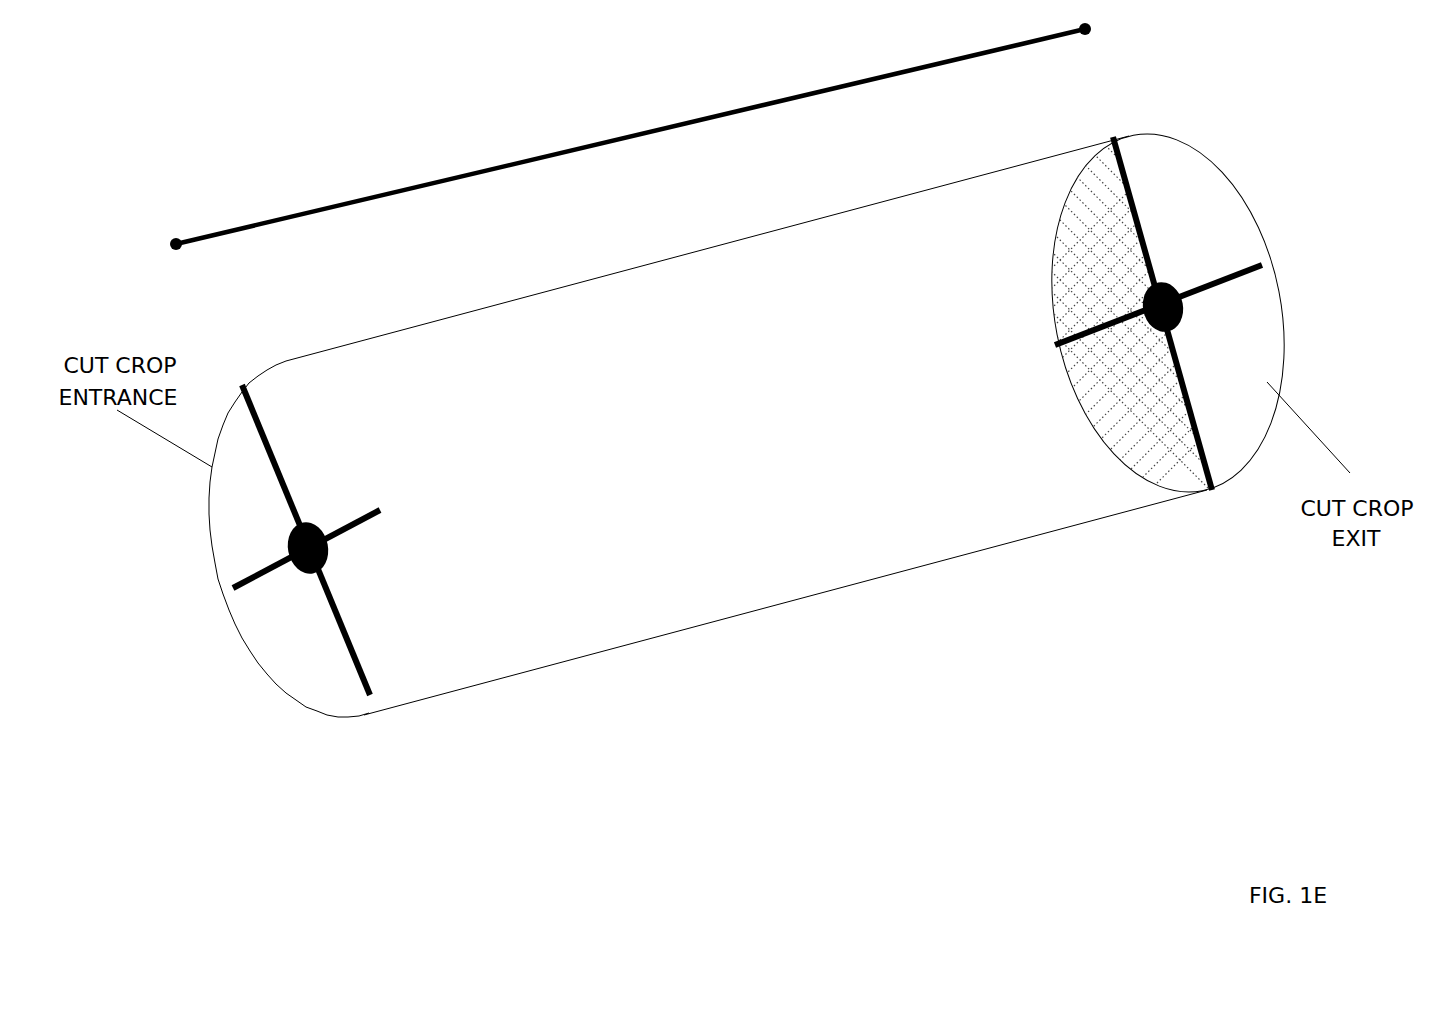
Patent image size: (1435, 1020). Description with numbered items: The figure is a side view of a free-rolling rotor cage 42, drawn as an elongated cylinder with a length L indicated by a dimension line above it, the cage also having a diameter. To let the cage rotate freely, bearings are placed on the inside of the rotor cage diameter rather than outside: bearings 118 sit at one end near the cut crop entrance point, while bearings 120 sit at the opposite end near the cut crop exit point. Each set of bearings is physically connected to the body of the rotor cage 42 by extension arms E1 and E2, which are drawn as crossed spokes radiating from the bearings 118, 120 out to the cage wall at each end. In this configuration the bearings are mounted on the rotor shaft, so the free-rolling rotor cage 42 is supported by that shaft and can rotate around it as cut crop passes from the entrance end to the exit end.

The free-rolling rotor cage 42 is at (683, 255).
The bearings 118 is at (290, 543).
The bearings 120 is at (1178, 298).
The extension arm E1 is at (262, 435).
The extension arm E2 is at (263, 573).
The length L is at (710, 120).